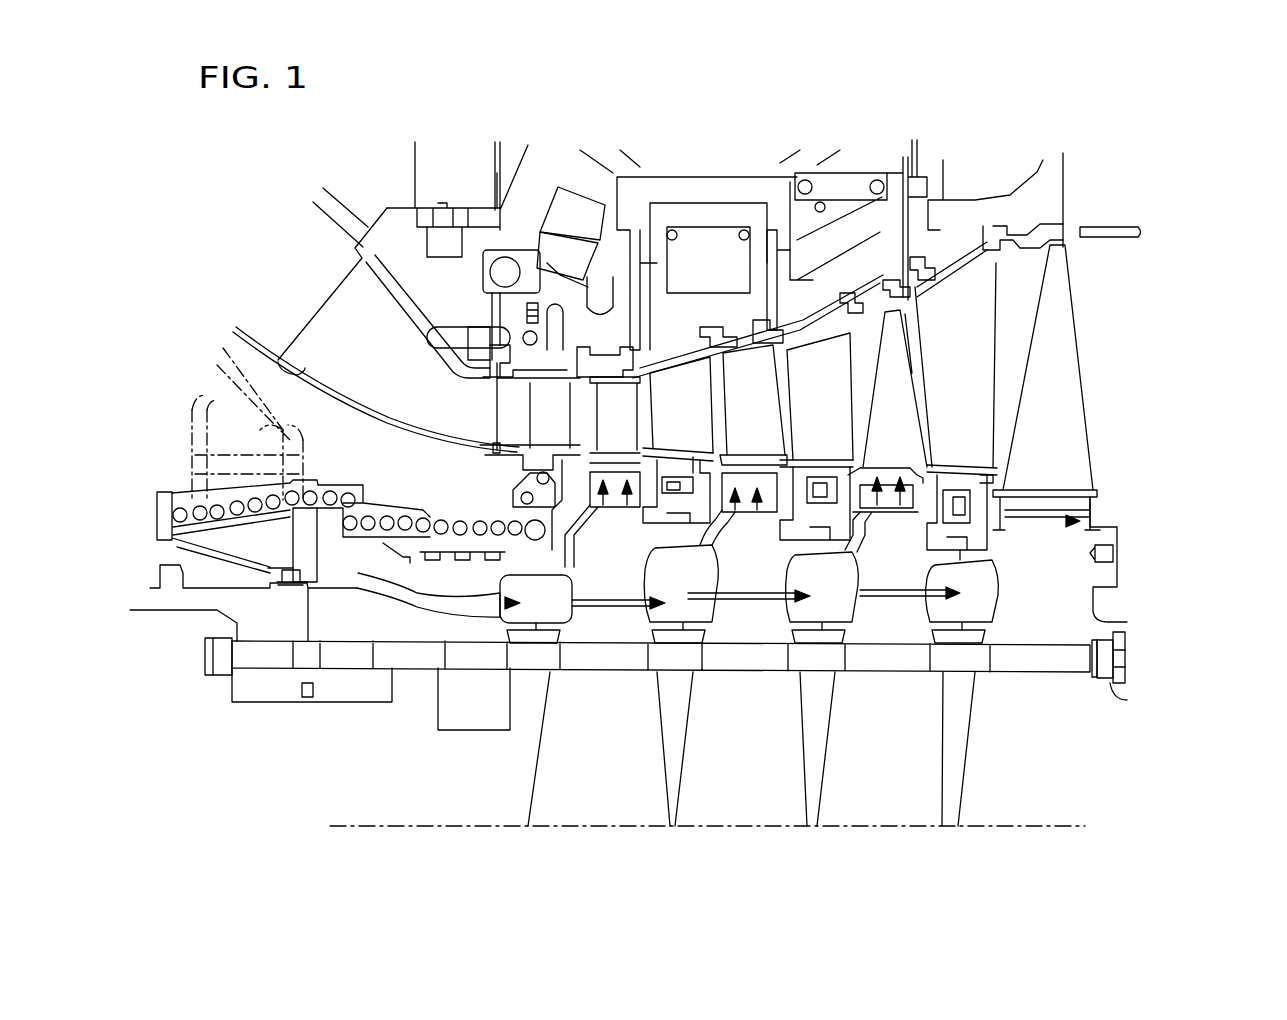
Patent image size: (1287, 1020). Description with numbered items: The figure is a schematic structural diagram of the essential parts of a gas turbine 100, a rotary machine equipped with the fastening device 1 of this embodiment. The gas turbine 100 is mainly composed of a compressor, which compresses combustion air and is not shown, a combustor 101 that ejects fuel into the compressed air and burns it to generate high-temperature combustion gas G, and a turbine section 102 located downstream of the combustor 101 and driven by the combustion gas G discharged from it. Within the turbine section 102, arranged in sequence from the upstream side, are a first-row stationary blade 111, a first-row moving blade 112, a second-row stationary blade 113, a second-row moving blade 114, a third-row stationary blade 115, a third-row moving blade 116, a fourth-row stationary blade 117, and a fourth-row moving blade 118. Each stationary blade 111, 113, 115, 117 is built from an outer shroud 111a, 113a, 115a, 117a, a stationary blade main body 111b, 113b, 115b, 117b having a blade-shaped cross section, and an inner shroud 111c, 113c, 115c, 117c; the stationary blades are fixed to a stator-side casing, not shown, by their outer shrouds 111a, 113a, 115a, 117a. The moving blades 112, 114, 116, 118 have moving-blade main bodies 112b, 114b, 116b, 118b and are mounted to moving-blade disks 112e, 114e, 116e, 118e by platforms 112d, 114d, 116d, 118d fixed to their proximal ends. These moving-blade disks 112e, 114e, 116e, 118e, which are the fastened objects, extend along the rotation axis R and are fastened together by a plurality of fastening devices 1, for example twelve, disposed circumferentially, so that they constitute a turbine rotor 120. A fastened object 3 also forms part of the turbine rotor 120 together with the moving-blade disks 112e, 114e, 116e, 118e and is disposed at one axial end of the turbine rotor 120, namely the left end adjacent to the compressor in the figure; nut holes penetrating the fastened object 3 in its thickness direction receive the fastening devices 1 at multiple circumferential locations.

The fastening device 1 is at (185, 656).
The fastened object 3 is at (259, 686).
The gas turbine 100 is at (730, 100).
The combustor 101 is at (332, 326).
The turbine section 102 is at (1120, 380).
The first-row stationary blade 111 is at (554, 355).
The outer shroud 111a is at (517, 362).
The stationary blade main body 111b is at (540, 413).
The inner shroud 111c is at (512, 470).
The first-row moving blade 112 is at (626, 322).
The moving-blade main body 112b is at (610, 393).
The platform 112d is at (613, 458).
The moving-blade disk 112e is at (592, 803).
The second-row stationary blade 113 is at (683, 320).
The outer shroud 113a is at (657, 173).
The stationary blade main body 113b is at (707, 405).
The inner shroud 113c is at (680, 457).
The second-row moving blade 114 is at (763, 290).
The moving-blade main body 114b is at (747, 363).
The platform 114d is at (760, 460).
The moving-blade disk 114e is at (748, 803).
The third-row stationary blade 115 is at (858, 250).
The outer shroud 115a is at (830, 283).
The stationary blade main body 115b is at (845, 395).
The inner shroud 115c is at (820, 460).
The third-row moving blade 116 is at (893, 233).
The moving-blade main body 116b is at (900, 380).
The platform 116d is at (890, 490).
The moving-blade disk 116e is at (887, 803).
The fourth-row stationary blade 117 is at (955, 233).
The outer shroud 117a is at (993, 220).
The stationary blade main body 117b is at (983, 323).
The inner shroud 117c is at (963, 472).
The fourth-row moving blade 118 is at (1078, 218).
The moving-blade main body 118b is at (1052, 305).
The platform 118d is at (1073, 490).
The moving-blade disk 118e is at (1022, 803).
The turbine rotor 120 is at (1150, 588).
The combustion gas G is at (460, 408).
The rotation axis R is at (445, 826).